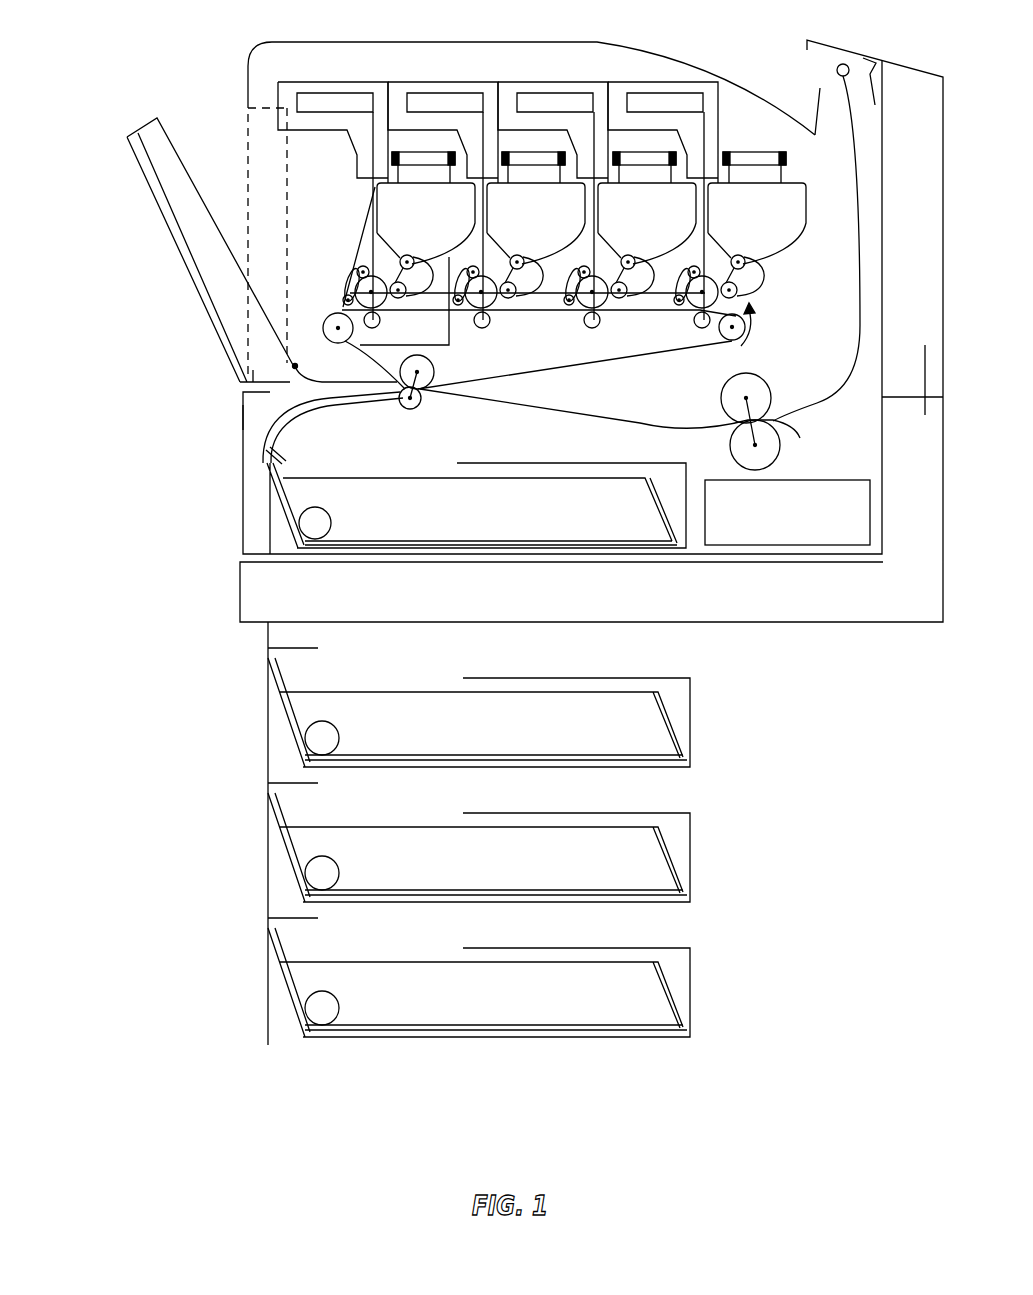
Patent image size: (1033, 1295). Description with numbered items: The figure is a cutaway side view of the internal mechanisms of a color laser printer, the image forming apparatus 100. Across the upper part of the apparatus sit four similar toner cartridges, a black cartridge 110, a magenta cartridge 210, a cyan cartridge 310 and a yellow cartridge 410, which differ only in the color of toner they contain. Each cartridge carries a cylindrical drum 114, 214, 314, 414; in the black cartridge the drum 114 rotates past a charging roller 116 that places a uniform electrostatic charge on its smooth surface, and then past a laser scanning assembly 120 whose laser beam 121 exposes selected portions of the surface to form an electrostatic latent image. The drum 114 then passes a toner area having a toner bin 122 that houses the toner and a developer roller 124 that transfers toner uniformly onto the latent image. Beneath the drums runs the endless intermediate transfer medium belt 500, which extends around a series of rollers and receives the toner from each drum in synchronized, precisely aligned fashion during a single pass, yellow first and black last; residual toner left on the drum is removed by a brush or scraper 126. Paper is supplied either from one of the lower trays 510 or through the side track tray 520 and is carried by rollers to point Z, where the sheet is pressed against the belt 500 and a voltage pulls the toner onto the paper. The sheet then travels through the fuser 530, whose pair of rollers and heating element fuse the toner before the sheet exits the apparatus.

The image forming apparatus 100 is at (203, 88).
The laser scanning assembly 120 is at (323, 82).
The laser beam 121 is at (377, 187).
The charging roller 116 is at (357, 271).
The brush or scraper 126 is at (347, 268).
The drum 114 is at (356, 296).
The developer roller 124 is at (338, 328).
The toner bin 122 is at (294, 367).
The point Z is at (243, 418).
The black cartridge 110 is at (443, 246).
The magenta cartridge 210 is at (553, 246).
The cyan cartridge 310 is at (663, 246).
The yellow cartridge 410 is at (773, 246).
The drum 214 is at (492, 322).
The drum 314 is at (584, 313).
The drum 414 is at (694, 313).
The intermediate transfer medium belt 500 is at (648, 353).
The fuser 530 is at (780, 432).
The lower trays 510 is at (312, 717).
The side track tray 520 is at (143, 137).